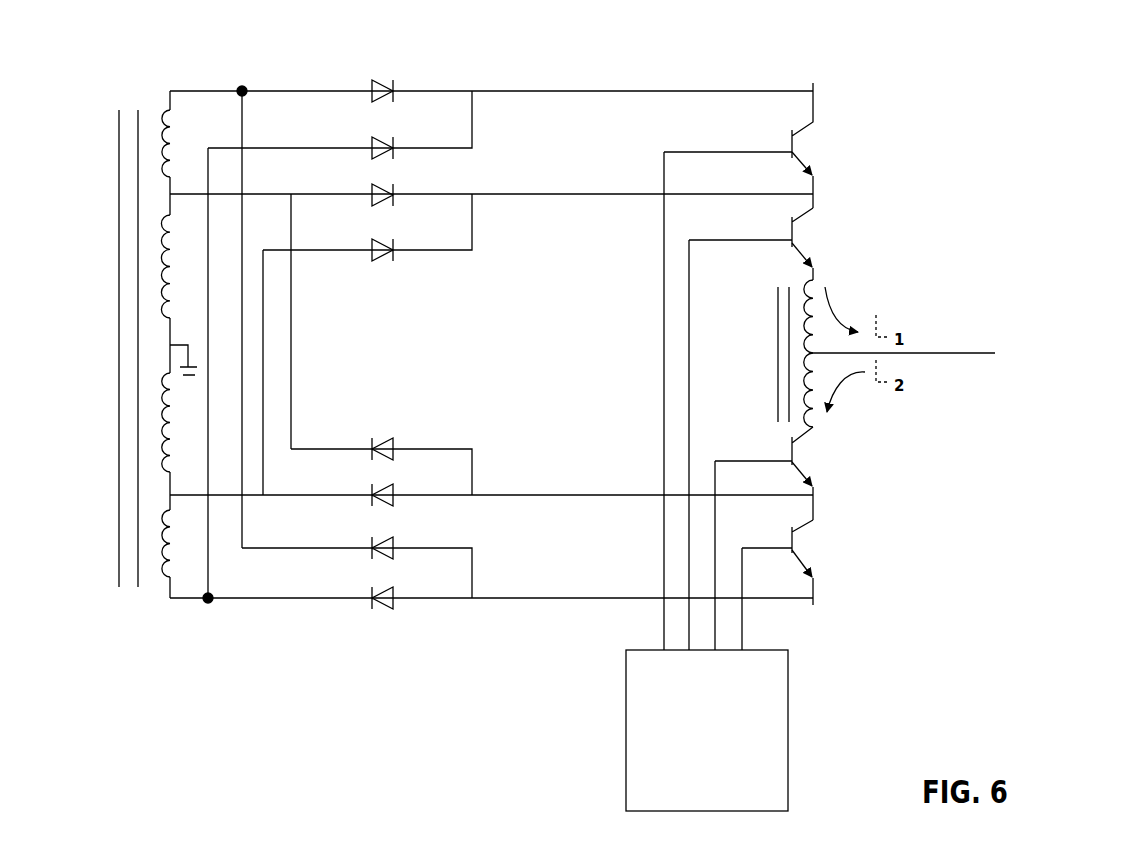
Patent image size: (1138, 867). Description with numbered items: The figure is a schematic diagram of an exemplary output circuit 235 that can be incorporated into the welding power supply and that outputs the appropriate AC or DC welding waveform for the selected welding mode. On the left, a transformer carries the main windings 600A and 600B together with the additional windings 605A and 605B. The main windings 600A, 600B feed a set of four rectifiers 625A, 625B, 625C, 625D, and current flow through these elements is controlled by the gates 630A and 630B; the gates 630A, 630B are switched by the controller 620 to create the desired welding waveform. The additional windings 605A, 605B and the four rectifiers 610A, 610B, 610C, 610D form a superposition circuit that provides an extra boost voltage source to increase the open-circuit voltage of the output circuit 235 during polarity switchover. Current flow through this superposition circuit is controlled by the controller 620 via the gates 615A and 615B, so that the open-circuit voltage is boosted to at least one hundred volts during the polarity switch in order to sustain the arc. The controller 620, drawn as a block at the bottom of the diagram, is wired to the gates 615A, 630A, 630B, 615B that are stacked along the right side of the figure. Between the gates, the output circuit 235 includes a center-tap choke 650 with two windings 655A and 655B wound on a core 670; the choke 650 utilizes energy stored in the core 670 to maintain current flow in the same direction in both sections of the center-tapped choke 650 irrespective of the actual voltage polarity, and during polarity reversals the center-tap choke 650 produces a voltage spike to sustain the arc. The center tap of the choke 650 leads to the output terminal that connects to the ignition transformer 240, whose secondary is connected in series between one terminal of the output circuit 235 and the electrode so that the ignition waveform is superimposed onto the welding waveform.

The output circuit 235 is at (618, 66).
The ignition transformer 240 is at (970, 370).
The winding 600A is at (162, 258).
The winding 600B is at (162, 420).
The additional winding 605A is at (165, 112).
The additional winding 605B is at (165, 578).
The rectifier 610A is at (380, 86).
The rectifier 610B is at (380, 155).
The rectifier 610C is at (383, 543).
The rectifier 610D is at (383, 610).
The rectifier 625A is at (380, 202).
The rectifier 625B is at (380, 258).
The rectifier 625C is at (383, 440).
The rectifier 625D is at (383, 490).
The gate 615A is at (800, 150).
The gate 615B is at (803, 552).
The gate 630A is at (800, 240).
The gate 630B is at (800, 458).
The center-tap choke 650 is at (807, 344).
The winding 655A is at (810, 282).
The winding 655B is at (815, 428).
The core 670 is at (778, 304).
The controller 620 is at (789, 725).